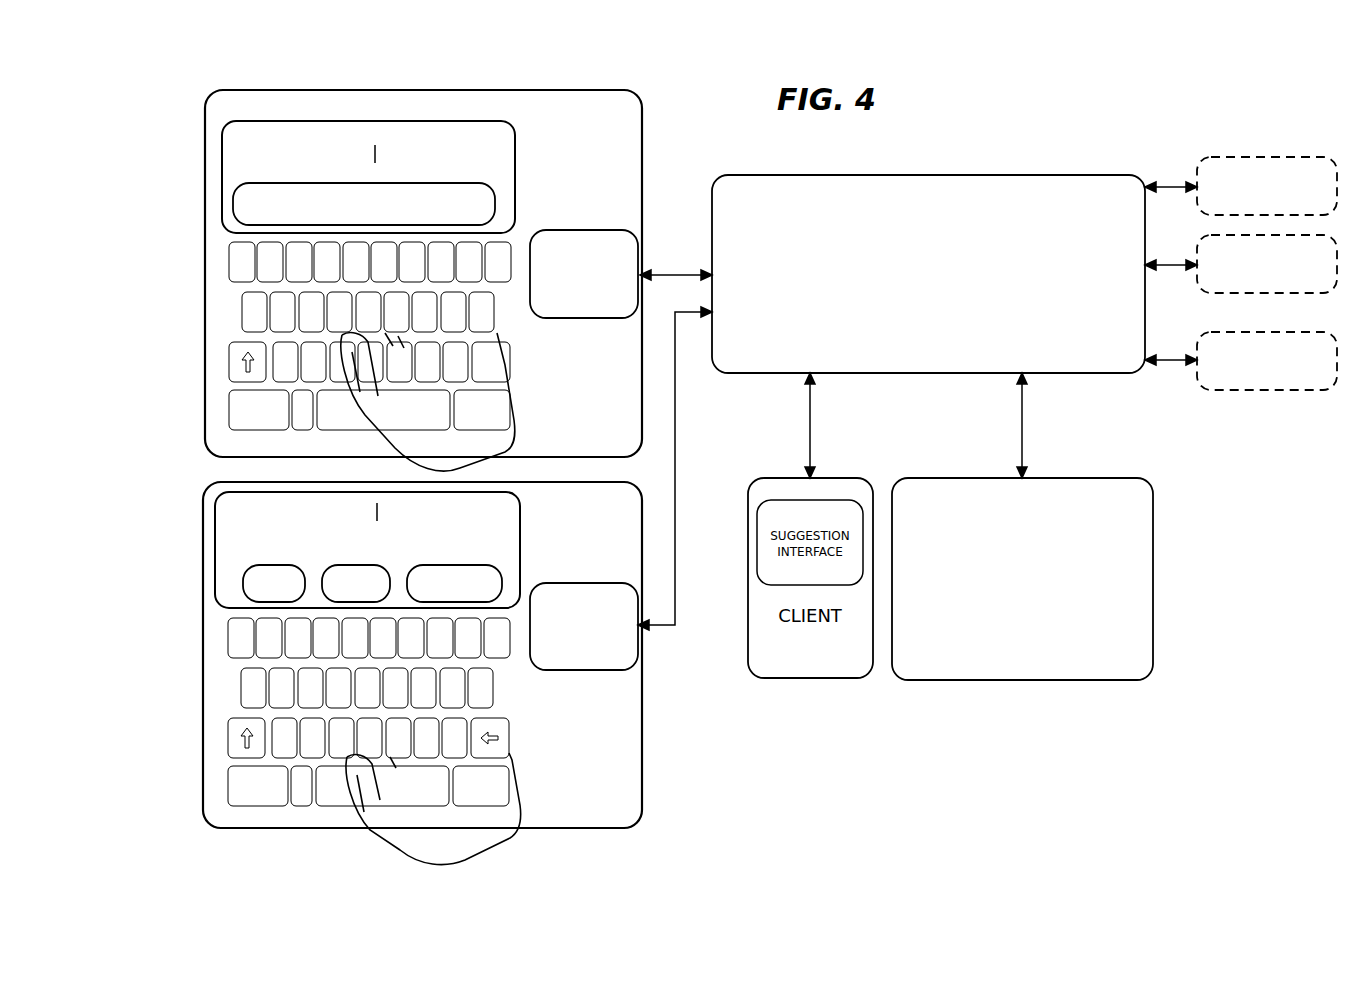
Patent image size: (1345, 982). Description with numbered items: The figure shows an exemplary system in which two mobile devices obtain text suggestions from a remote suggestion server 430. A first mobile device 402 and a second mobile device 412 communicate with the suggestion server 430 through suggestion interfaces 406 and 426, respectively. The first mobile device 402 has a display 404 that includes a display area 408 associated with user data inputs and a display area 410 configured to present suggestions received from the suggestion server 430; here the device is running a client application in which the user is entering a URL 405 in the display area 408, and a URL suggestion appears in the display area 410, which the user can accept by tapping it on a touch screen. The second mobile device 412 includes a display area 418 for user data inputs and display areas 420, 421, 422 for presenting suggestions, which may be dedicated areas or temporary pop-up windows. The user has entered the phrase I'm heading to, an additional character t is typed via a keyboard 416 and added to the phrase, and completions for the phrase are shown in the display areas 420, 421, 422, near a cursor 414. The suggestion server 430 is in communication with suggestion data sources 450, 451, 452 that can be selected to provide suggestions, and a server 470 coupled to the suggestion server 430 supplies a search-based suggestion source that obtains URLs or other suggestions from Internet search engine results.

The first mobile device 402 is at (642, 100).
The display 404 is at (352, 122).
The URL 405 is at (377, 157).
The suggestion interface 406 is at (572, 318).
The display area 408 is at (487, 172).
The display area 410 is at (497, 205).
The second mobile device 412 is at (642, 748).
The cursor 414 is at (378, 512).
The keyboard 416 is at (500, 688).
The display area 418 is at (490, 547).
The display area 420 is at (255, 565).
The display area 421 is at (332, 565).
The display area 422 is at (415, 565).
The suggestion interface 426 is at (568, 670).
The suggestion server 430 is at (928, 274).
The suggestion data source 450 is at (1207, 157).
The suggestion data source 451 is at (1225, 293).
The suggestion data source 452 is at (1205, 390).
The server 470 is at (1153, 555).